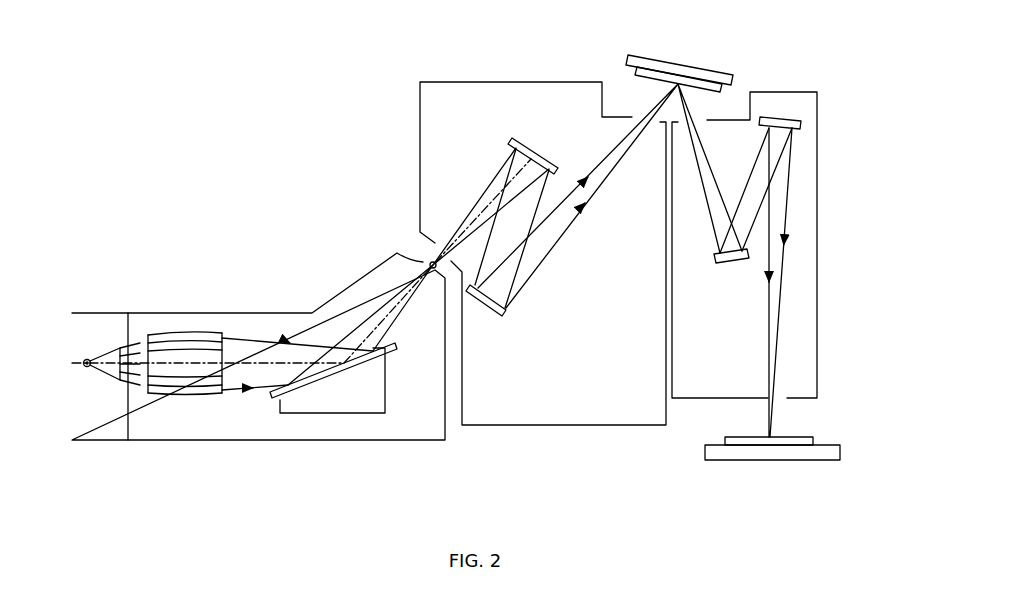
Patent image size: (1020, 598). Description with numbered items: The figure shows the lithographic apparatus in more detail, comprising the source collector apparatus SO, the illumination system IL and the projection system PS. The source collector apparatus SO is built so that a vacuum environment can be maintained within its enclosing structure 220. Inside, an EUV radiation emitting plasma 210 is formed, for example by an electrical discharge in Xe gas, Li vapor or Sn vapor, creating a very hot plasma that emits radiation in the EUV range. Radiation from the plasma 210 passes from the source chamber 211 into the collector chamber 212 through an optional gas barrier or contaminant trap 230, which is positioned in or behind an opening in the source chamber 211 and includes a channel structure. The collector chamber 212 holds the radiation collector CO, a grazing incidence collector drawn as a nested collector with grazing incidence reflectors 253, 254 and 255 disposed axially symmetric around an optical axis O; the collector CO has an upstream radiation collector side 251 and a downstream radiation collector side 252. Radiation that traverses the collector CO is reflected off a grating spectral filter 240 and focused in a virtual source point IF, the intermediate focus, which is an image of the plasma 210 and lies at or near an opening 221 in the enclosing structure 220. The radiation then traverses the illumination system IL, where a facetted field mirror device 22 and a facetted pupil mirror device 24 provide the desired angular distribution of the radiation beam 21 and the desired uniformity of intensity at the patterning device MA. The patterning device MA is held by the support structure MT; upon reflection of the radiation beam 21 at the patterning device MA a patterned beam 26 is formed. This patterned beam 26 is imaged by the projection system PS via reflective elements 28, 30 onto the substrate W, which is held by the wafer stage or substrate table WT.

The source collector apparatus SO is at (243, 203).
The illumination system IL is at (440, 66).
The projection system PS is at (683, 413).
The patterning device MA is at (638, 68).
The support structure MT is at (712, 73).
The substrate W is at (788, 441).
The substrate table WT is at (743, 448).
The radiation collector CO is at (196, 336).
The virtual source point IF is at (432, 271).
The optical axis O is at (480, 217).
The radiation beam 21 is at (548, 233).
The facetted field mirror device 22 is at (540, 148).
The facetted pupil mirror device 24 is at (494, 302).
The patterned beam 26 is at (706, 178).
The reflective element 28 is at (726, 263).
The reflective element 30 is at (780, 118).
The EUV radiation emitting plasma 210 is at (87, 372).
The source chamber 211 is at (107, 330).
The collector chamber 212 is at (262, 430).
The enclosing structure 220 is at (342, 289).
The opening 221 is at (421, 257).
The contaminant trap 230 is at (136, 388).
The grating spectral filter 240 is at (336, 366).
The upstream radiation collector side 251 is at (162, 403).
The downstream radiation collector side 252 is at (227, 338).
The grazing incidence reflector 253 is at (207, 395).
The grazing incidence reflector 254 is at (185, 377).
The grazing incidence reflector 255 is at (173, 382).